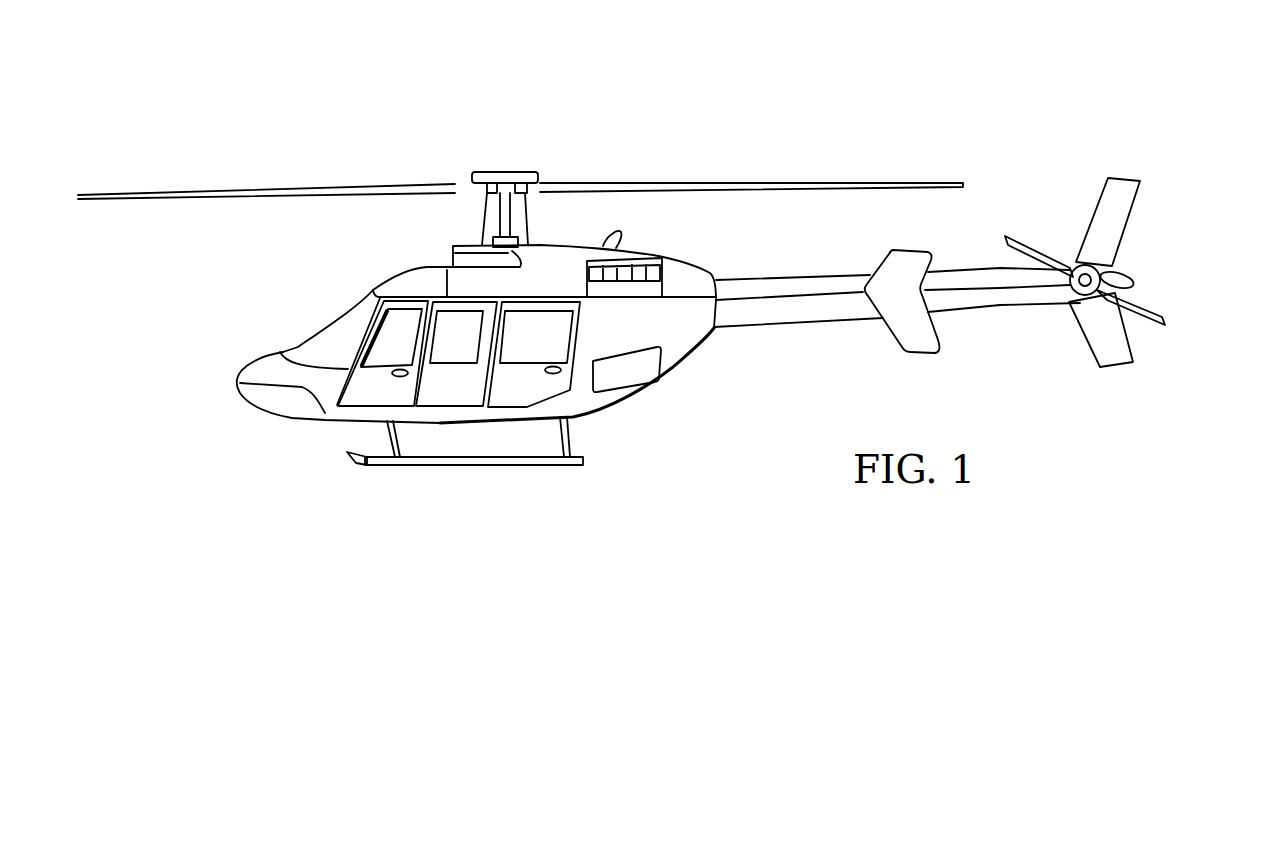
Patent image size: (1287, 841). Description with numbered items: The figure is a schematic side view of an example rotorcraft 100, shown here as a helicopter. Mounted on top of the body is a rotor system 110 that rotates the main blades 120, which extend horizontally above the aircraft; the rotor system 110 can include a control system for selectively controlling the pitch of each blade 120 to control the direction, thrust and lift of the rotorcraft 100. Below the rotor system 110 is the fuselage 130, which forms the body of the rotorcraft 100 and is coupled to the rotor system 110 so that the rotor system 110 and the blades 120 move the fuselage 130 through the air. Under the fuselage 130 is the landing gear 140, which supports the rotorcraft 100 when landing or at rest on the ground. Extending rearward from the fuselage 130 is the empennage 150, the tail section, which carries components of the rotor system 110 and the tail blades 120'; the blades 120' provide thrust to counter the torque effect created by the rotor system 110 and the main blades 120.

The rotorcraft 100 is at (342, 124).
The rotor system 110 is at (505, 171).
The blades 120 is at (520, 159).
The blades 120' is at (1133, 272).
The fuselage 130 is at (283, 415).
The landing gear 140 is at (443, 467).
The empennage 150 is at (797, 328).